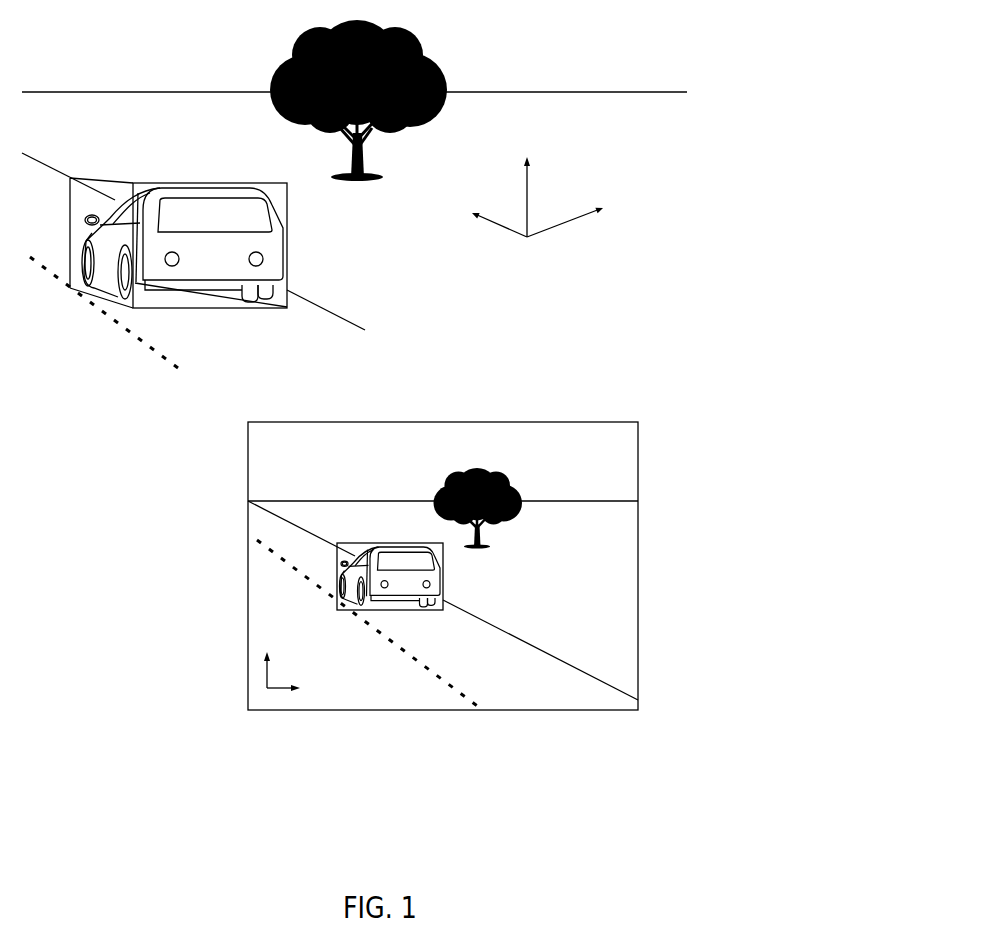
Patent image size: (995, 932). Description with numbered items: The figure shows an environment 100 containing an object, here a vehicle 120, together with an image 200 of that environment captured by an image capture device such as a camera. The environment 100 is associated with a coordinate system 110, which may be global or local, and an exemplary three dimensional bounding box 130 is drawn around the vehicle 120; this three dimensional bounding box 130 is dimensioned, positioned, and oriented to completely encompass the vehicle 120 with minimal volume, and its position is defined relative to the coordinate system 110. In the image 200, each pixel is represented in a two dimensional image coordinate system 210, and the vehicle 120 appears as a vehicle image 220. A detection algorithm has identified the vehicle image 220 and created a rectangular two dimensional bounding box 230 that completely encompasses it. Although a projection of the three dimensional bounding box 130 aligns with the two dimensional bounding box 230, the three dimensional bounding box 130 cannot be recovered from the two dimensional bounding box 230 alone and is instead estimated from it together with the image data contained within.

The environment 100 is at (555, 56).
The coordinate system 110 is at (527, 237).
The vehicle 120 is at (78, 297).
The three dimensional bounding box 130 is at (68, 247).
The image 200 is at (518, 421).
The image coordinate system 210 is at (267, 688).
The vehicle image 220 is at (400, 600).
The two dimensional bounding box 230 is at (383, 543).